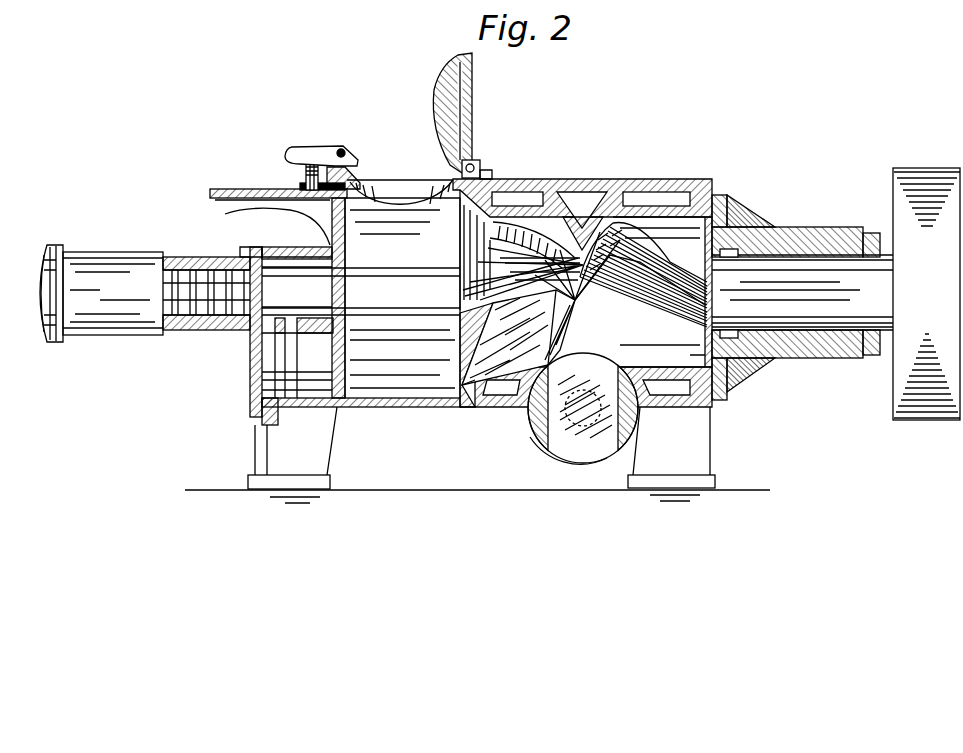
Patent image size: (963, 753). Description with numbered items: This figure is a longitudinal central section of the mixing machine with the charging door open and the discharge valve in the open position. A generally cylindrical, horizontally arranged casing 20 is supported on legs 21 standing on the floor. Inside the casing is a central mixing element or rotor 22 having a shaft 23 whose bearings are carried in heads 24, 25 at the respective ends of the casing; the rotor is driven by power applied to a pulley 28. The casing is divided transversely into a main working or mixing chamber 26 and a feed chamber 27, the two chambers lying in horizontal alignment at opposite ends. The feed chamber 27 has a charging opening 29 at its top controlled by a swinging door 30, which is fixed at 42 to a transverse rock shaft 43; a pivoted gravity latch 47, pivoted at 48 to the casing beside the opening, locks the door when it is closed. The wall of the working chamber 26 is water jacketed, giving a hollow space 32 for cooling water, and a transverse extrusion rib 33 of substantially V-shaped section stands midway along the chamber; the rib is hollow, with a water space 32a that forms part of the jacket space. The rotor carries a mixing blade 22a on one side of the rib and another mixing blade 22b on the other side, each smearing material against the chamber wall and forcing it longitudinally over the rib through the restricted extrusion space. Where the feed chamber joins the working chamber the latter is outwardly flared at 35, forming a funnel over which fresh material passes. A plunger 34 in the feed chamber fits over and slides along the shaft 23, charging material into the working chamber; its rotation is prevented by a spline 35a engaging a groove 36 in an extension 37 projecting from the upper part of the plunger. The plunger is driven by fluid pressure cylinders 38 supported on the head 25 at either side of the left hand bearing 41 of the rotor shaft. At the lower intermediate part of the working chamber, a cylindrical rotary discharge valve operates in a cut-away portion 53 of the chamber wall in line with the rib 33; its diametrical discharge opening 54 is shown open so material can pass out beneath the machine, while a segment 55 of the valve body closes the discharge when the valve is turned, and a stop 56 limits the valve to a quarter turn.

The casing 20 is at (633, 200).
The legs 21 is at (283, 443).
The rotor 22 is at (660, 250).
The mixing blade 22a is at (620, 270).
The mixing blade 22b is at (518, 337).
The shaft 23 is at (432, 297).
The head 24 is at (748, 205).
The head 25 is at (250, 362).
The working chamber 26 is at (659, 292).
The feed chamber 27 is at (402, 348).
The pulley 28 is at (907, 360).
The charging opening 29 is at (405, 190).
The door 30 is at (457, 112).
The hollow space 32 is at (517, 198).
The water space 32a is at (597, 207).
The extrusion rib 33 is at (585, 200).
The plunger 34 is at (345, 240).
The flared portion 35 is at (477, 383).
The spline 35a is at (318, 190).
The groove 36 is at (225, 190).
The extension 37 is at (262, 210).
The fluid pressure cylinder 38 is at (105, 330).
The bearing 41 is at (195, 257).
The fixing point 42 is at (489, 172).
The rock shaft 43 is at (476, 164).
The gravity latch 47 is at (313, 145).
The pivot 48 is at (342, 150).
The cut-away portion 53 is at (505, 395).
The discharge opening 54 is at (570, 437).
The segment 55 is at (541, 423).
The stop 56 is at (600, 452).